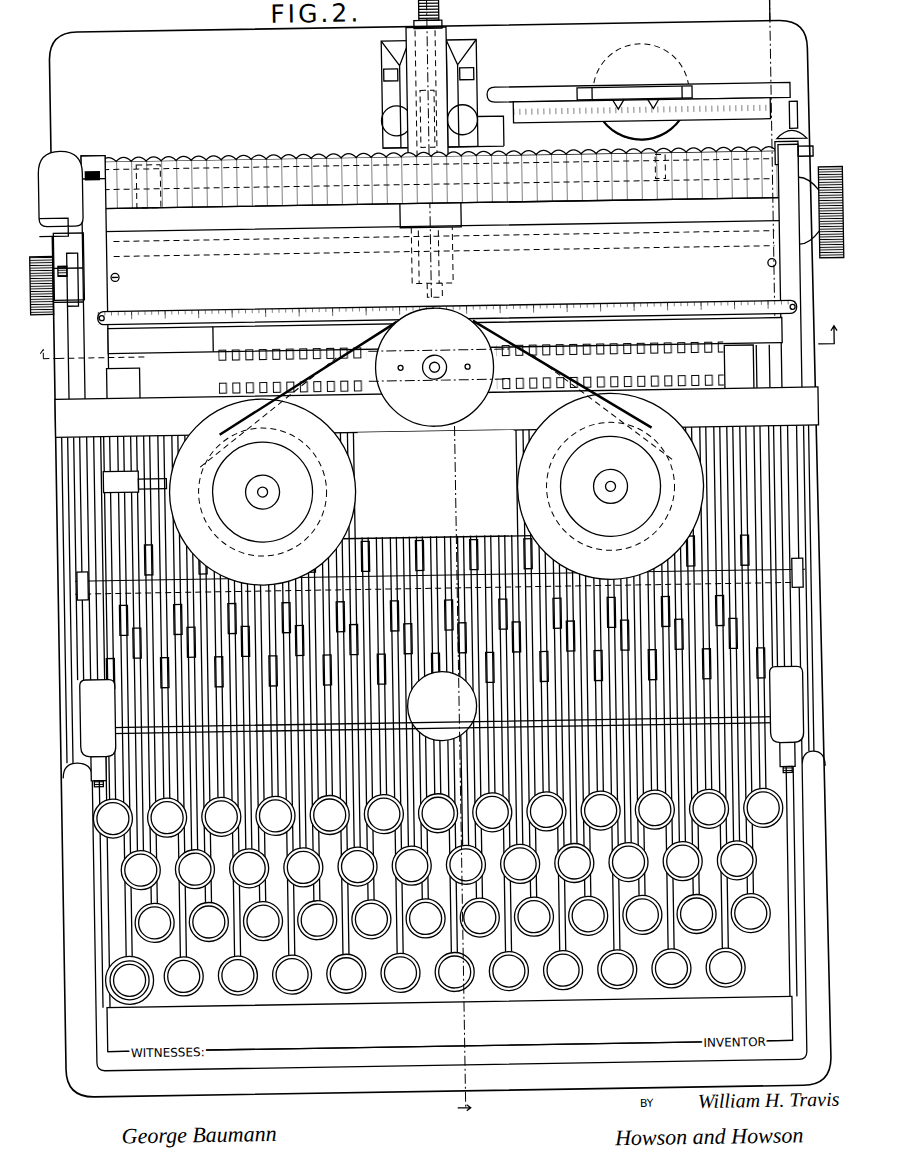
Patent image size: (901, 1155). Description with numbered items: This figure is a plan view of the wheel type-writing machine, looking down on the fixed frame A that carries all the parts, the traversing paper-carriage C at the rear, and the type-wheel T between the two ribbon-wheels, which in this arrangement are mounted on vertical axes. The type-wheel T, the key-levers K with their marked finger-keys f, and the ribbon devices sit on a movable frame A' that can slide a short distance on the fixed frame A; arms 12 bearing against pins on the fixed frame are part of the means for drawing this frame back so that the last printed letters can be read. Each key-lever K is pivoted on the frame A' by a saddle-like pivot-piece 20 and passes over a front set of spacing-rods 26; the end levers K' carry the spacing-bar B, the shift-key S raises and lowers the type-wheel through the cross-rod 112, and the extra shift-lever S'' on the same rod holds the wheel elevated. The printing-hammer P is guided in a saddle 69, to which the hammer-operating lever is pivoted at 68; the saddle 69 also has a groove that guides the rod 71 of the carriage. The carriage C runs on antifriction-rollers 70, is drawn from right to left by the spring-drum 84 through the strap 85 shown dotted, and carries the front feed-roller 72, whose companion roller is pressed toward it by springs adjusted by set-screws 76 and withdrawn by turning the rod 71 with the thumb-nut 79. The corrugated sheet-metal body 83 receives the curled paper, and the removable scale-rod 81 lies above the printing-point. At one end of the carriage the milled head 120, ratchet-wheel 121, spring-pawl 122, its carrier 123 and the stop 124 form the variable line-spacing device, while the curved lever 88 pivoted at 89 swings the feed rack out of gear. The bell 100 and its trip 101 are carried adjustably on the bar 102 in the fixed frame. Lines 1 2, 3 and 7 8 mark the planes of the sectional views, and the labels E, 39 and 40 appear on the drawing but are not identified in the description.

The fixed frame A is at (440, 560).
The movable frame A' is at (437, 412).
The spacing-bar B is at (450, 1023).
The traversing carriage C is at (459, 204).
The carriage frame E is at (345, 280).
The printing-hammer P is at (428, 142).
The type-wheel T is at (436, 445).
The key-levers K is at (439, 892).
The end levers K' is at (444, 716).
The shift-key S is at (129, 980).
The extra shift-lever S'' is at (98, 734).
The finger-keys f is at (480, 892).
The section line 1 is at (790, 1091).
The section line 2 is at (749, 10).
The section line 3 is at (453, 770).
The section line 7 is at (93, 348).
The section line 8 is at (828, 329).
The arms 12 is at (439, 579).
The pivot-piece 20 is at (442, 692).
The front set of spacing-rods 26 is at (442, 706).
The pivot screws 39 is at (439, 365).
The scale 40 is at (730, 107).
The pivot 68 is at (442, 93).
The saddle 69 is at (417, 121).
The antifriction-rollers 70 is at (641, 109).
The guide-rod 71 is at (433, 215).
The front feed-roller 72 is at (445, 336).
The set-screws 76 is at (440, 152).
The thumb-nut 79 is at (821, 204).
The scale-rod 81 is at (446, 305).
The sheet-metal body 83 is at (433, 177).
The spring-drum 84 is at (433, 167).
The strap 85 is at (401, 169).
The curved lever 88 is at (790, 143).
The pivot 89 is at (816, 157).
The bell 100 is at (641, 92).
The bell-trip 101 is at (664, 92).
The bar 102 is at (638, 96).
The cross-rod 112 is at (134, 482).
The milled head 120 is at (55, 293).
The ratchet-wheel 121 is at (82, 283).
The spring-pawl 122 is at (84, 246).
The spring-pawl carrier 123 is at (60, 194).
The stop 124 is at (99, 278).